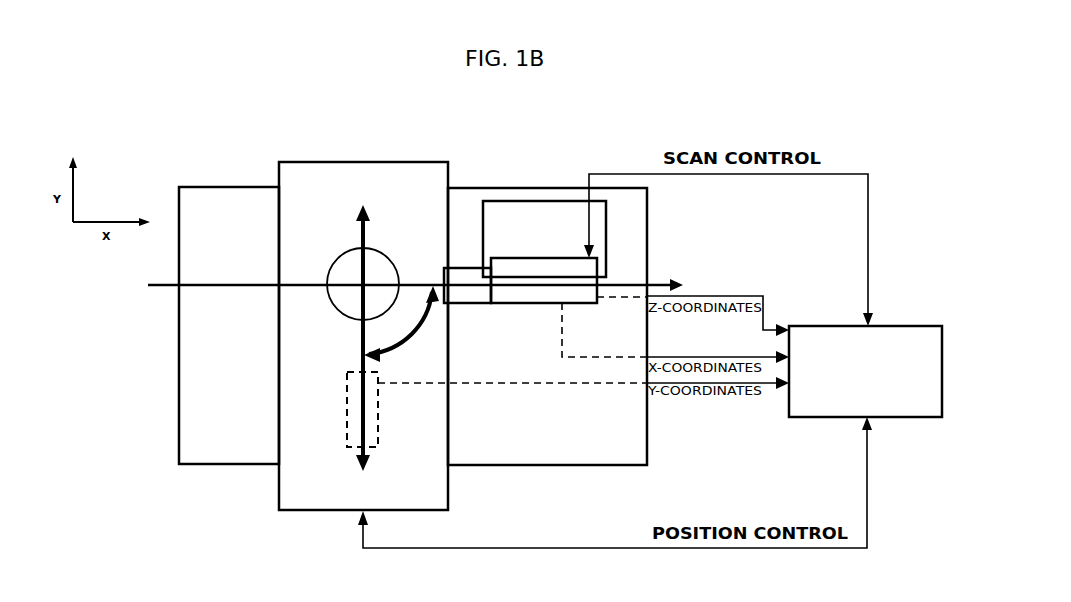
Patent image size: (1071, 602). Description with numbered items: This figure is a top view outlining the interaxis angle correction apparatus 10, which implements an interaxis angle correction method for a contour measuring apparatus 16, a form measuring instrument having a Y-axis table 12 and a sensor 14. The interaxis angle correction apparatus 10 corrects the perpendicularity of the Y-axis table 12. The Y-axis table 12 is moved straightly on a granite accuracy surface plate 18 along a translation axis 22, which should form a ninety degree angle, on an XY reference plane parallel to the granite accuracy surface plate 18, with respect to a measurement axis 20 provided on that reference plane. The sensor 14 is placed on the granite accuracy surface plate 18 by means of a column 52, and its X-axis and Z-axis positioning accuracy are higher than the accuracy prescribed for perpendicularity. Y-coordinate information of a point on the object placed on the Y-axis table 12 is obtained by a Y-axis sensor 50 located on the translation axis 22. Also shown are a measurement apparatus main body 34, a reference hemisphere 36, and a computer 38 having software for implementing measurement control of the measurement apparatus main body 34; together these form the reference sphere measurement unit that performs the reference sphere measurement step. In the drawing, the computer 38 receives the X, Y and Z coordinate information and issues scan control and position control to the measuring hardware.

The interaxis angle correction apparatus 10 is at (847, 286).
The Y-axis table 12 is at (319, 190).
The sensor 14 is at (508, 305).
The contour measuring apparatus 16 is at (714, 220).
The granite accuracy surface plate 18 is at (220, 215).
The measurement axis 20 is at (622, 282).
The translation axis 22 is at (363, 400).
The measurement apparatus main body 34 is at (664, 450).
The reference hemisphere 36 is at (385, 252).
The computer 38 is at (813, 418).
The Y-axis sensor 50 is at (347, 422).
The column 52 is at (566, 200).